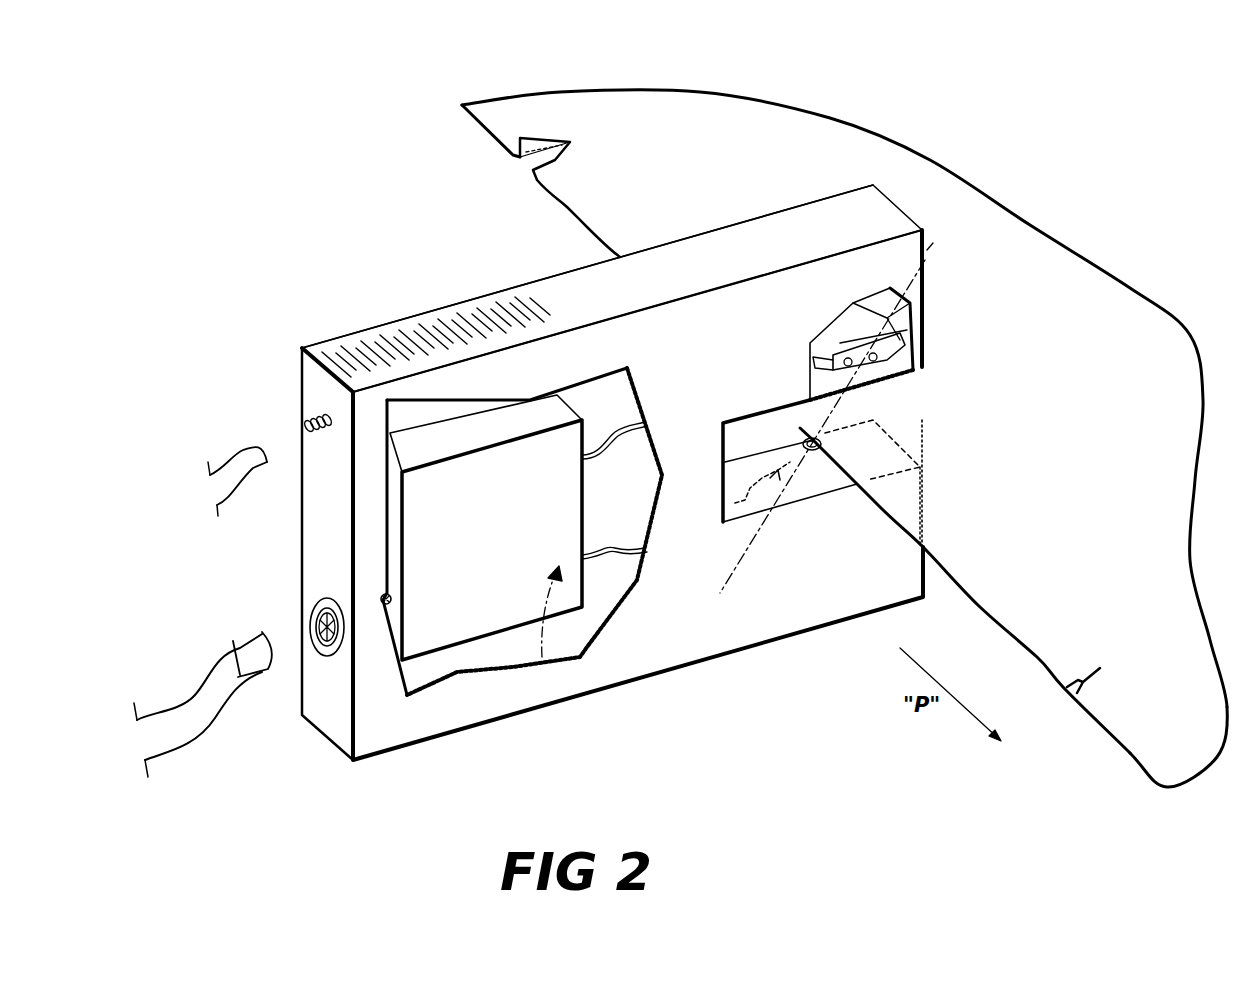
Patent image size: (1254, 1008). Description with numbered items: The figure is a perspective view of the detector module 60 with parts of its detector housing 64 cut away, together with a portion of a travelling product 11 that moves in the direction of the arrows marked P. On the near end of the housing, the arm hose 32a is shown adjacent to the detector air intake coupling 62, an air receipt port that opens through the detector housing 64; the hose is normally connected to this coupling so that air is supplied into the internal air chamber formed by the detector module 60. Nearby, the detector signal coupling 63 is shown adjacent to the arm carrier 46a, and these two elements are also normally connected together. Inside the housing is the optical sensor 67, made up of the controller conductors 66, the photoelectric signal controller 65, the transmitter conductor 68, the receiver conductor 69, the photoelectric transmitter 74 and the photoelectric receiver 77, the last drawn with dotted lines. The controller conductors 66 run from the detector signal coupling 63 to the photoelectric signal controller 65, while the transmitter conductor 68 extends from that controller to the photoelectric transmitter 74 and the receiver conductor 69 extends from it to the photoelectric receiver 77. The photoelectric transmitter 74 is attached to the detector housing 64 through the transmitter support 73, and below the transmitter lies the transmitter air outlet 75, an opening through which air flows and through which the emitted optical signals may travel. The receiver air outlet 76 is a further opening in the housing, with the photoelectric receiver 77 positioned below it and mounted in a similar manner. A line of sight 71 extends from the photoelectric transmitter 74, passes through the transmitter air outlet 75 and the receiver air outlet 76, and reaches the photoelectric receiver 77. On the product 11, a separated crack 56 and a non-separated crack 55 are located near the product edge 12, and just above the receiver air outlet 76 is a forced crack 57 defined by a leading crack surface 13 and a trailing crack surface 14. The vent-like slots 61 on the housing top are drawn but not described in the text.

The product 11 is at (1170, 597).
The product edge 12 is at (1130, 757).
The leading crack surface 13 is at (803, 393).
The trailing crack surface 14 is at (756, 412).
The arm hose 32a is at (243, 482).
The arm carrier 46a is at (210, 655).
The non-separated crack 55 is at (1067, 687).
The separated crack 56 is at (518, 166).
The forced crack 57 is at (893, 413).
The detector module 60 is at (408, 280).
The vent slots 61 is at (355, 352).
The detector air intake coupling 62 is at (306, 425).
The detector signal coupling 63 is at (318, 624).
The detector housing 64 is at (546, 295).
The photoelectric signal controller 65 is at (455, 633).
The controller conductors 66 is at (393, 600).
The optical sensor 67 is at (545, 663).
The transmitter conductor 68 is at (615, 440).
The receiver conductor 69 is at (590, 558).
The line of sight 71 is at (760, 532).
The transmitter support 73 is at (915, 342).
The photoelectric transmitter 74 is at (910, 370).
The transmitter air outlet 75 is at (908, 372).
The receiver air outlet 76 is at (806, 446).
The photoelectric receiver 77 is at (808, 468).